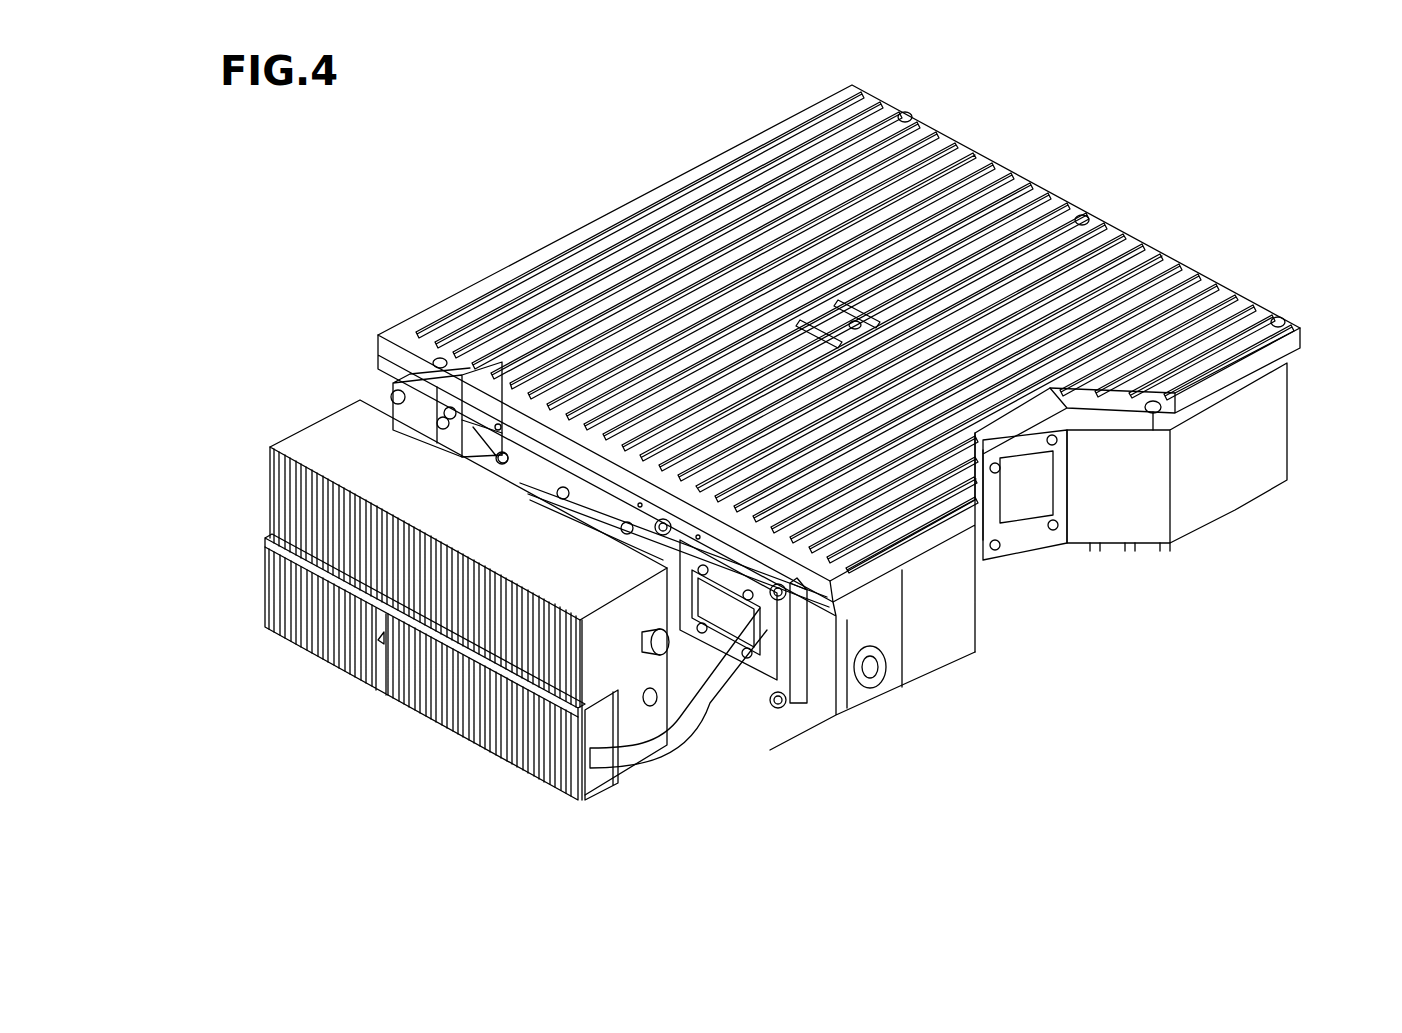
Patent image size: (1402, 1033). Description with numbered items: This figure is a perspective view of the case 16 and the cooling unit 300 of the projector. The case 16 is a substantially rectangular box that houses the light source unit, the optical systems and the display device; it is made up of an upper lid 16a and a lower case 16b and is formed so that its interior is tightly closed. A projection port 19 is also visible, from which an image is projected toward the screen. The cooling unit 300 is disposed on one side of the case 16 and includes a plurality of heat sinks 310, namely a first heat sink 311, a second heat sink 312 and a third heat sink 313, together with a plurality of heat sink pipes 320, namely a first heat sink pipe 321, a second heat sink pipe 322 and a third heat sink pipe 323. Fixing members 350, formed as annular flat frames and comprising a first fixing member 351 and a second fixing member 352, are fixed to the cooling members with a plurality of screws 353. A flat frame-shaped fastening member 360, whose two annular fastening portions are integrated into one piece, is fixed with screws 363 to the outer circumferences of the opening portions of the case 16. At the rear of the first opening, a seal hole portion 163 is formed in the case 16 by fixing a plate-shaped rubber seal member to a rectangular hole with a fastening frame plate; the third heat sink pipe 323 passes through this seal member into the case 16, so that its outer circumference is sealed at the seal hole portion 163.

The case 16 is at (1100, 188).
The upper lid 16a is at (1210, 338).
The lower case 16b is at (1265, 415).
The projection port 19 is at (1017, 505).
The seal hole portion 163 is at (390, 383).
The cooling unit 300 is at (506, 562).
The heat sinks 310 is at (458, 562).
The first heat sink 311 is at (355, 422).
The second heat sink 312 is at (592, 782).
The third heat sink 313 is at (323, 640).
The heat sink pipes 320 is at (506, 667).
The first heat sink pipe 321 is at (665, 647).
The second heat sink pipe 322 is at (676, 737).
The third heat sink pipe 323 is at (262, 548).
The fixing members 350 is at (728, 466).
The first fixing member 351 is at (470, 445).
The second fixing member 352 is at (770, 623).
The screws 353 is at (504, 455).
The fastening member 360 is at (800, 665).
The screws 363 is at (787, 707).